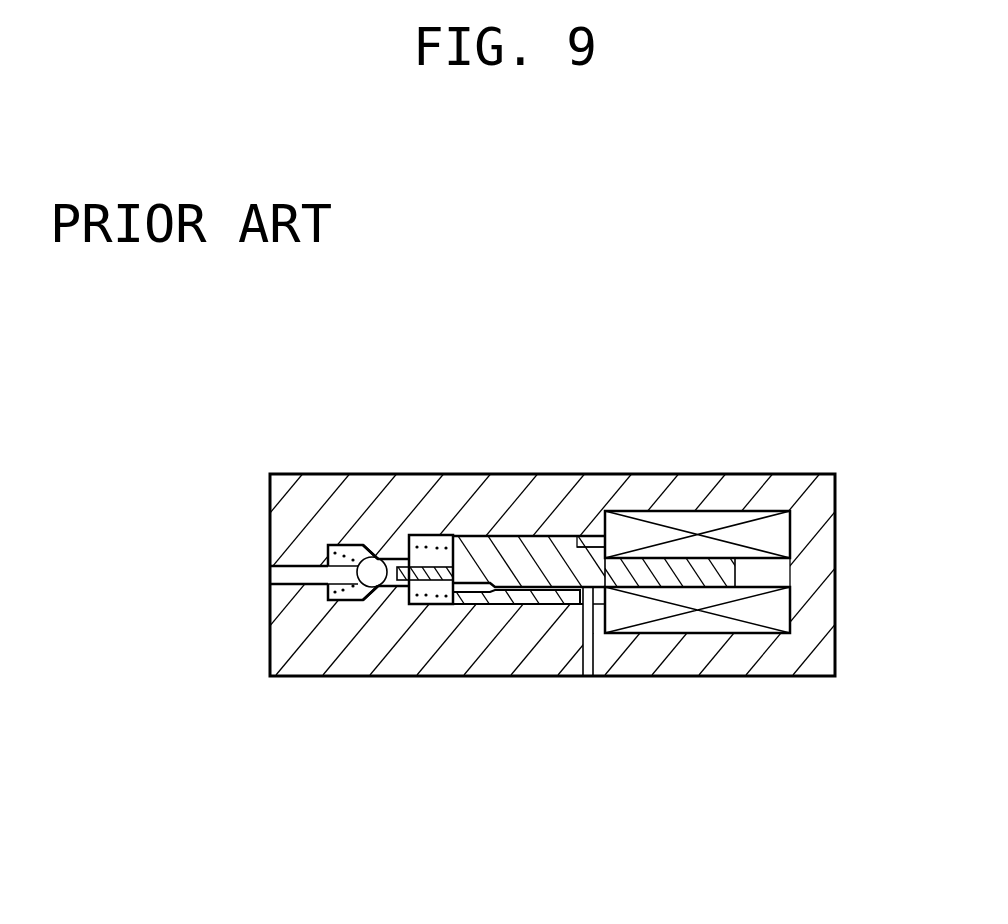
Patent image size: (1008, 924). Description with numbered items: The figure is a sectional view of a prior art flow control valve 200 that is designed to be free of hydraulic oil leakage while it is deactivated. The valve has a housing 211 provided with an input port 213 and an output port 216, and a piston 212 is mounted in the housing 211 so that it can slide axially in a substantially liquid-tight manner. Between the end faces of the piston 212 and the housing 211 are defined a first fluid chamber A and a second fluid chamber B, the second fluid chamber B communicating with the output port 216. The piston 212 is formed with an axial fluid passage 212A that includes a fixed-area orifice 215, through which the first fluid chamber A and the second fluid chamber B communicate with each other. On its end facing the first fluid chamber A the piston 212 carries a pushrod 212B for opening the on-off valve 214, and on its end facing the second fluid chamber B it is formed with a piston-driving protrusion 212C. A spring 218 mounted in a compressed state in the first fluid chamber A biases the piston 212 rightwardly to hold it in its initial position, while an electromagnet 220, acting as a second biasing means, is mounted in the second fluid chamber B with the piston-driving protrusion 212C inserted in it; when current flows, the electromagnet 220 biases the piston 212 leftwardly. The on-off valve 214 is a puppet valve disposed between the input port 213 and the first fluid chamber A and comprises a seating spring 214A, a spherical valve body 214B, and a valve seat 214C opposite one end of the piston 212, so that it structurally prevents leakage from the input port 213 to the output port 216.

The flow control valve 200 is at (788, 472).
The housing 211 is at (289, 525).
The piston 212 is at (477, 550).
The axial fluid passage 212A is at (543, 585).
The pushrod 212B is at (426, 547).
The piston-driving protrusion 212C is at (683, 578).
The input port 213 is at (292, 577).
The on-off valve 214 is at (292, 612).
The seating spring 214A is at (342, 583).
The spherical valve body 214B is at (375, 580).
The valve seat 214C is at (376, 552).
The fixed-area orifice 215 is at (500, 617).
The output port 216 is at (587, 657).
The spring 218 is at (410, 546).
The electromagnet 220 is at (787, 538).
The first fluid chamber A is at (377, 559).
The second fluid chamber B is at (590, 547).